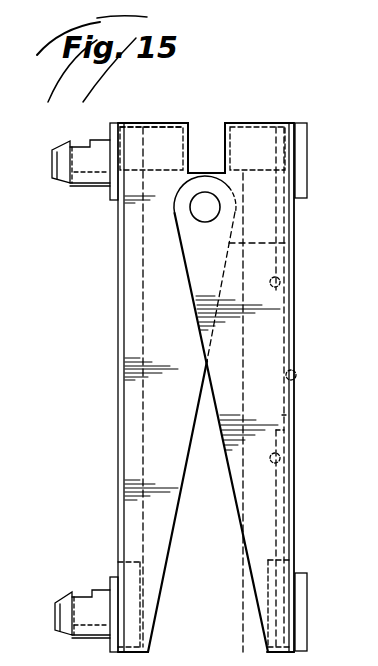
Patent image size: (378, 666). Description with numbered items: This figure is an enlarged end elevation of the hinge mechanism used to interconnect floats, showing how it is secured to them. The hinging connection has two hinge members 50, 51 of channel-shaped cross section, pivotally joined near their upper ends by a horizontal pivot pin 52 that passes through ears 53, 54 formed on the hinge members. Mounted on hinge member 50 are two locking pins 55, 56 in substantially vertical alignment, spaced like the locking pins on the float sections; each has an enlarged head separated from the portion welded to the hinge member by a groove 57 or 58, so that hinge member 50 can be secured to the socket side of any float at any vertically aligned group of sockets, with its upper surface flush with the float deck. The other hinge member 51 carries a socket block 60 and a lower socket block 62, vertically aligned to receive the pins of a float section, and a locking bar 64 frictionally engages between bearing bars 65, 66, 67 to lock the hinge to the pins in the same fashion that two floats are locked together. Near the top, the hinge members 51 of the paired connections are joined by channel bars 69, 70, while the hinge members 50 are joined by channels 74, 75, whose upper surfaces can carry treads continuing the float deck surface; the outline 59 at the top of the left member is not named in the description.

The hinge member 50 is at (155, 295).
The hinge member 51 is at (268, 322).
The horizontal pivot pin 52 is at (200, 208).
The ear 53 is at (302, 242).
The ear 54 is at (181, 249).
The locking pin 55 is at (53, 611).
The locking pin 56 is at (52, 168).
The groove 57 is at (80, 597).
The groove 58 is at (82, 149).
The upper end block 59 is at (152, 123).
The socket block 60 is at (308, 132).
The socket block 62 is at (303, 587).
The locking bar 64 is at (282, 415).
The bearing bar 65 is at (290, 287).
The bearing bar 66 is at (297, 460).
The bearing bar 67 is at (296, 375).
The channel bar 69 is at (282, 125).
The channel bar 70 is at (230, 127).
The channel 74 is at (132, 128).
The channel 75 is at (190, 133).